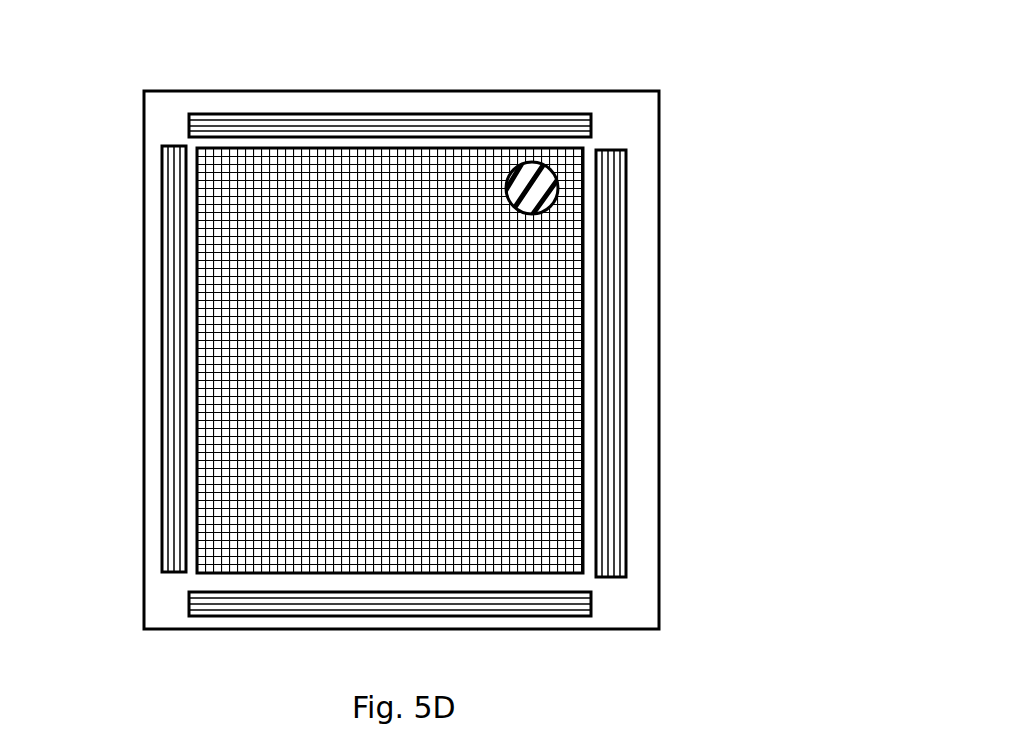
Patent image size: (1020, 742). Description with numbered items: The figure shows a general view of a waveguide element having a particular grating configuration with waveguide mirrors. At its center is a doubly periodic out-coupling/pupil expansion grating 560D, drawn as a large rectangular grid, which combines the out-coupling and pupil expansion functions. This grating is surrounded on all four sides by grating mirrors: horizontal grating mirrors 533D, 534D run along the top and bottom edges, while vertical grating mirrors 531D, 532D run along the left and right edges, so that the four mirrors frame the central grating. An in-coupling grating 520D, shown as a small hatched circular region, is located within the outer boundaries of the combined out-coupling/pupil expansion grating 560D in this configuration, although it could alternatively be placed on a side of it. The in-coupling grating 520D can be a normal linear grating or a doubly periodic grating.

The in-coupling grating 520D is at (556, 172).
The vertical grating mirror 531D is at (173, 370).
The vertical grating mirror 532D is at (607, 408).
The horizontal grating mirror 533D is at (428, 115).
The horizontal grating mirror 534D is at (490, 602).
The doubly periodic out-coupling/pupil expansion grating 560D is at (583, 573).